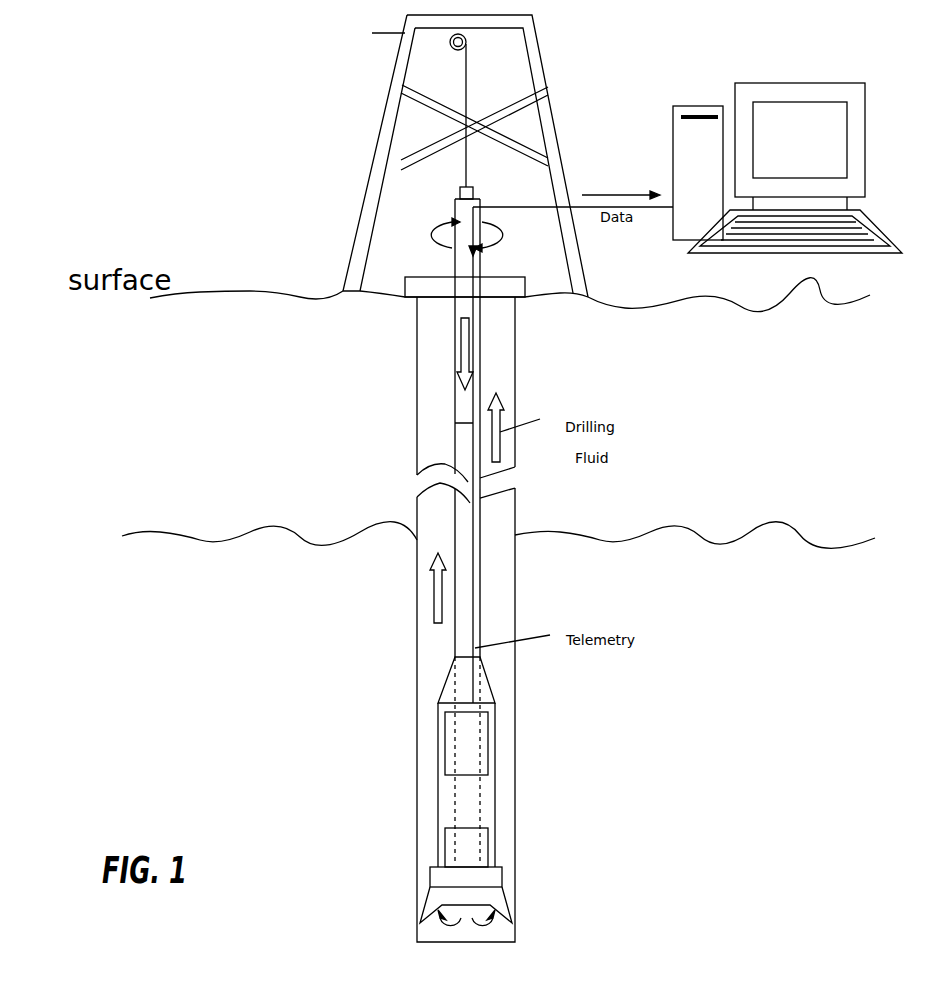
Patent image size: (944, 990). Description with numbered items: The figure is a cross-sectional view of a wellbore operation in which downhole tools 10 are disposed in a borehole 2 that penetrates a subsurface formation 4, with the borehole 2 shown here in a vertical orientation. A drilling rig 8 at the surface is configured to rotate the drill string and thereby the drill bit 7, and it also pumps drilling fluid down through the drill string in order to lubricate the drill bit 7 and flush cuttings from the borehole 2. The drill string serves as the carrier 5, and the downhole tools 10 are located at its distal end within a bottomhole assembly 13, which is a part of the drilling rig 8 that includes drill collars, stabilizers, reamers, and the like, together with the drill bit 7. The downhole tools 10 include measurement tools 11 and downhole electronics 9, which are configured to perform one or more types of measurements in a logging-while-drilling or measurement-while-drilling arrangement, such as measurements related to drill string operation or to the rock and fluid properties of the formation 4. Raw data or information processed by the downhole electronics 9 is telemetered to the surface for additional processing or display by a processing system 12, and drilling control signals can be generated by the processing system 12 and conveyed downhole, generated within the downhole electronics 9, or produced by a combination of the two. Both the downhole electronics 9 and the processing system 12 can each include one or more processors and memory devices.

The borehole 2 is at (428, 440).
The formation 4 is at (447, 570).
The carrier 5 is at (455, 525).
The drill bit 7 is at (440, 897).
The drilling rig 8 is at (330, 230).
The downhole electronics 9 is at (490, 758).
The downhole tools 10 is at (425, 736).
The measurement tools 11 is at (490, 838).
The processing system 12 is at (693, 110).
The bottomhole assembly 13 is at (502, 877).